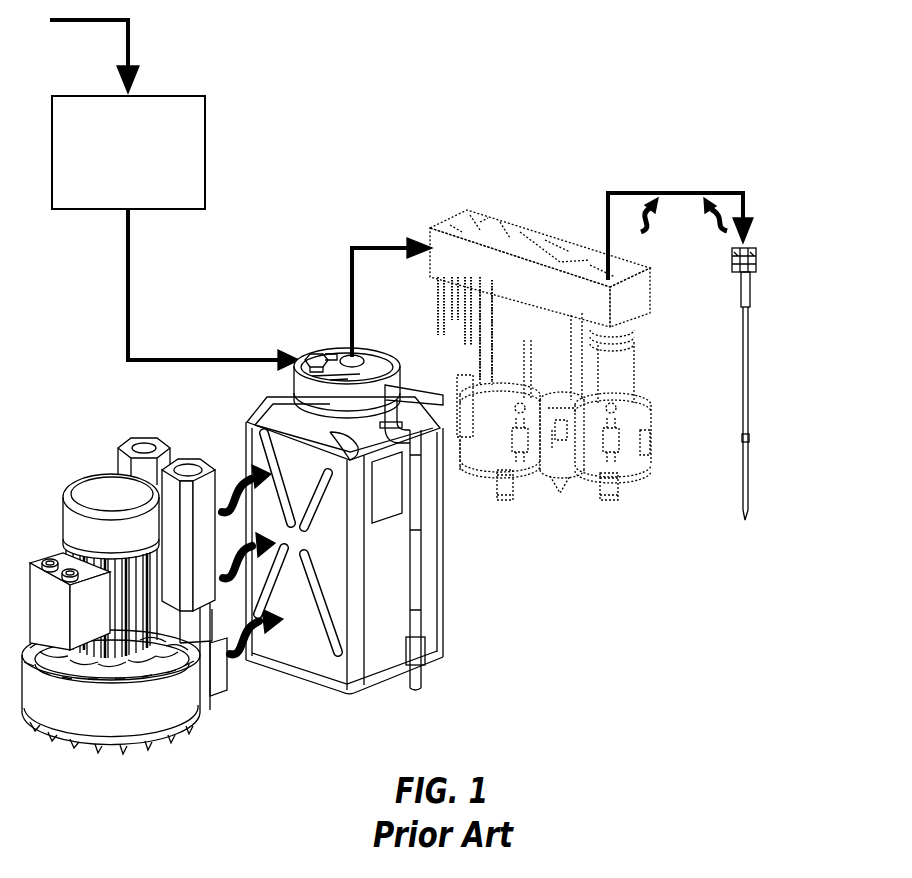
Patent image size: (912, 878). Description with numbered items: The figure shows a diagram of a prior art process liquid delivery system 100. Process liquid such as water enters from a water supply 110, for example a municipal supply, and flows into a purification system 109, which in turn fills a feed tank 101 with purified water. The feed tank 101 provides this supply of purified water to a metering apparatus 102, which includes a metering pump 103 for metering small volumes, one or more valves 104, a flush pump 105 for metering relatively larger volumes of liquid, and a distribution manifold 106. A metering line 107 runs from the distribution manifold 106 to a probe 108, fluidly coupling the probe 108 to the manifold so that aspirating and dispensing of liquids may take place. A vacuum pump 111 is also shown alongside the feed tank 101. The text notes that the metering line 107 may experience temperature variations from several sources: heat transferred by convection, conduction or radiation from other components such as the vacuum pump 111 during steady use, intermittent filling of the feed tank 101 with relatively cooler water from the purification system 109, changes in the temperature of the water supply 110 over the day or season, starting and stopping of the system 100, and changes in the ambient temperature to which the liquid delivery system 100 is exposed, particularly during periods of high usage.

The liquid delivery system 100 is at (460, 145).
The feed tank 101 is at (458, 593).
The metering apparatus 102 is at (545, 218).
The metering pump 103 is at (633, 437).
The valves 104 is at (550, 360).
The flush pump 105 is at (492, 474).
The distribution manifold 106 is at (453, 215).
The metering line 107 is at (672, 188).
The probe 108 is at (738, 325).
The purification system 109 is at (205, 152).
The water supply 110 is at (128, 49).
The vacuum pump 111 is at (136, 718).